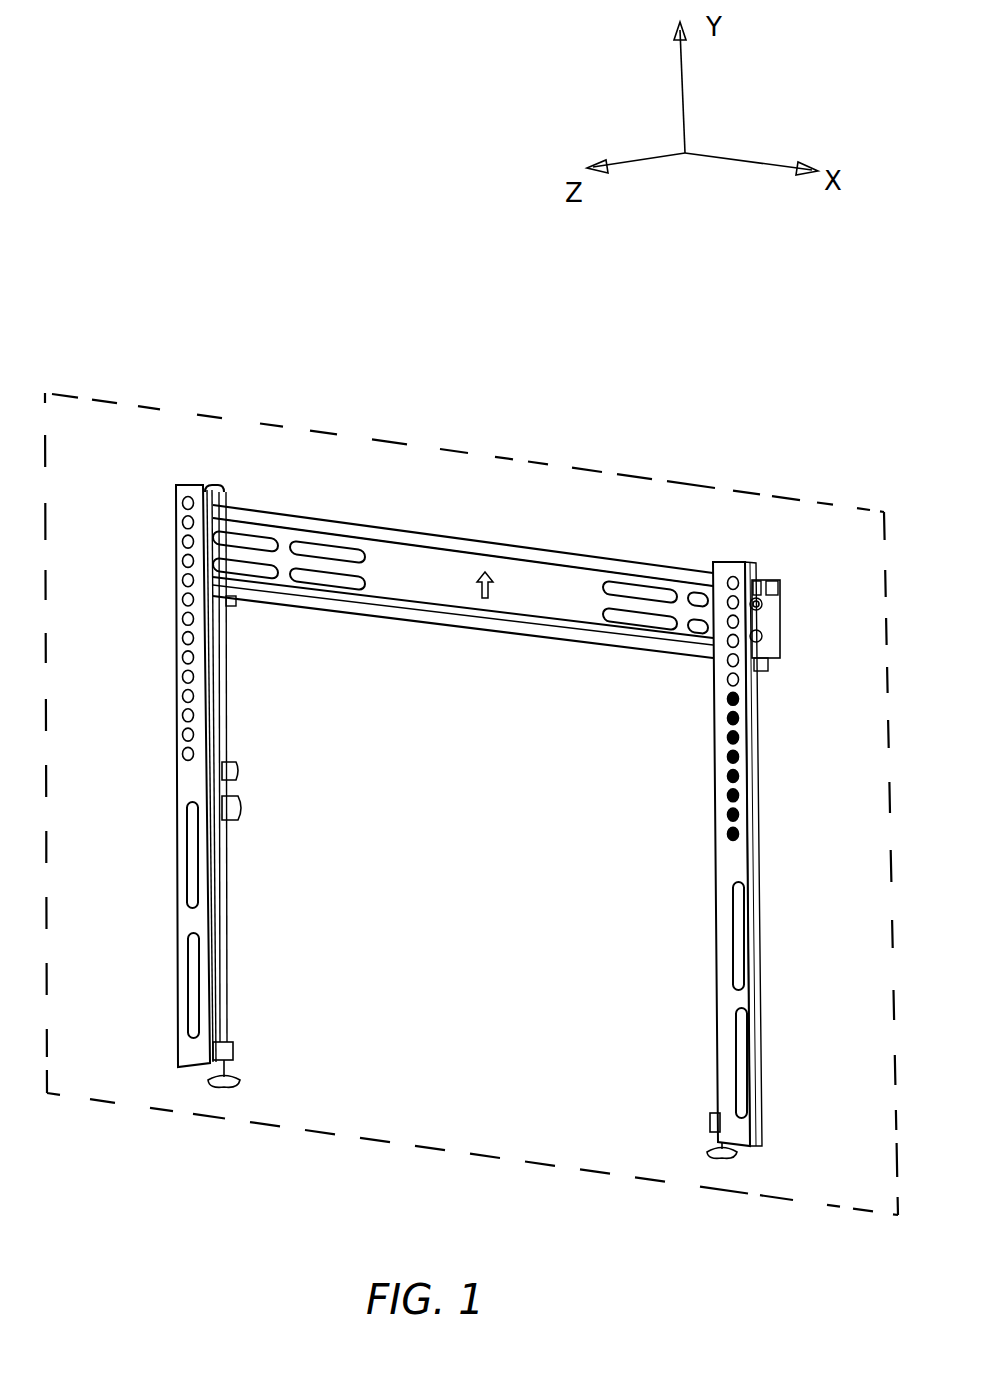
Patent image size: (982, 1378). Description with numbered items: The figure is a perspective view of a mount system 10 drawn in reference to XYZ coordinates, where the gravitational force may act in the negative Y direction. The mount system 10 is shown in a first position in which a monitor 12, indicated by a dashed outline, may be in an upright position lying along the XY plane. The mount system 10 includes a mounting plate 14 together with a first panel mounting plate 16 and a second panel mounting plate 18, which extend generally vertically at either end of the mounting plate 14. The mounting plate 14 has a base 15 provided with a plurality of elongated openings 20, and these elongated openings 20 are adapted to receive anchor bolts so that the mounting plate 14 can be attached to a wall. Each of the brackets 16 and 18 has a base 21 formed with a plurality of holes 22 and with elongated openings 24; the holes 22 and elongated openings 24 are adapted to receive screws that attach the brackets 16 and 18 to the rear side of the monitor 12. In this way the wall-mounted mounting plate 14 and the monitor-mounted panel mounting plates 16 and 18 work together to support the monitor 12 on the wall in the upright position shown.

The mount system 10 is at (528, 380).
The monitor 12 is at (705, 487).
The mounting plate 14 is at (433, 628).
The base 15 is at (530, 586).
The first panel mounting plate 16 is at (162, 936).
The second panel mounting plate 18 is at (694, 978).
The elongated openings 20 is at (350, 362).
The base 21 is at (198, 788).
The holes 22 is at (185, 548).
The elongated openings 24 is at (193, 990).